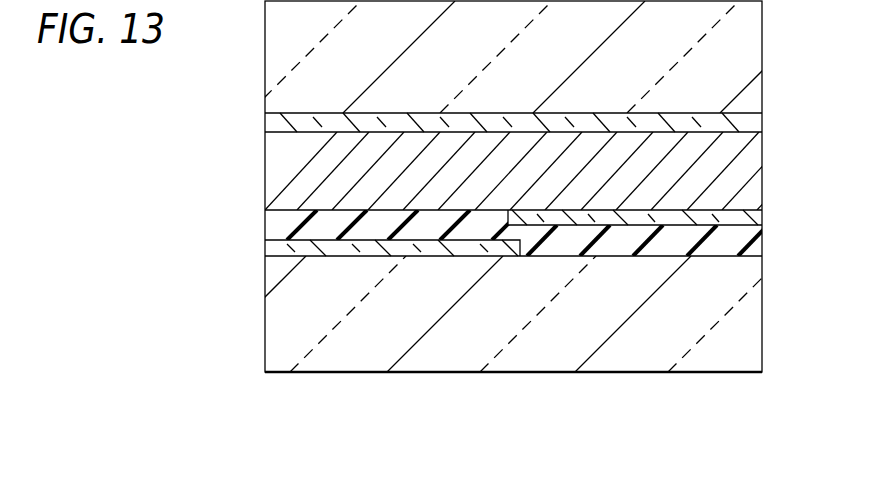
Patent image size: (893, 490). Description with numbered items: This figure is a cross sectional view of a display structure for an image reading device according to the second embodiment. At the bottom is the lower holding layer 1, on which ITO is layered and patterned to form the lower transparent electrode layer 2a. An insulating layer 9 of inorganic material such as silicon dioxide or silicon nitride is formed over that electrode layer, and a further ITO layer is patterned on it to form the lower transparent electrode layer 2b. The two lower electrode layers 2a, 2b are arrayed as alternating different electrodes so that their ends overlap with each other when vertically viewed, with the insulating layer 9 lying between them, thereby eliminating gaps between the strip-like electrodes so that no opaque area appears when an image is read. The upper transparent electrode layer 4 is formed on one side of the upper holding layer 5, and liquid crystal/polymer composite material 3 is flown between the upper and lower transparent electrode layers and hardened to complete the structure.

The lower holding layer 1 is at (750, 322).
The lower transparent electrode layer 2a is at (278, 246).
The lower transparent electrode layer 2b is at (750, 214).
The liquid crystal/polymer composite material 3 is at (750, 162).
The upper transparent electrode layer 4 is at (750, 119).
The upper holding layer 5 is at (750, 56).
The insulating layer 9 is at (750, 245).